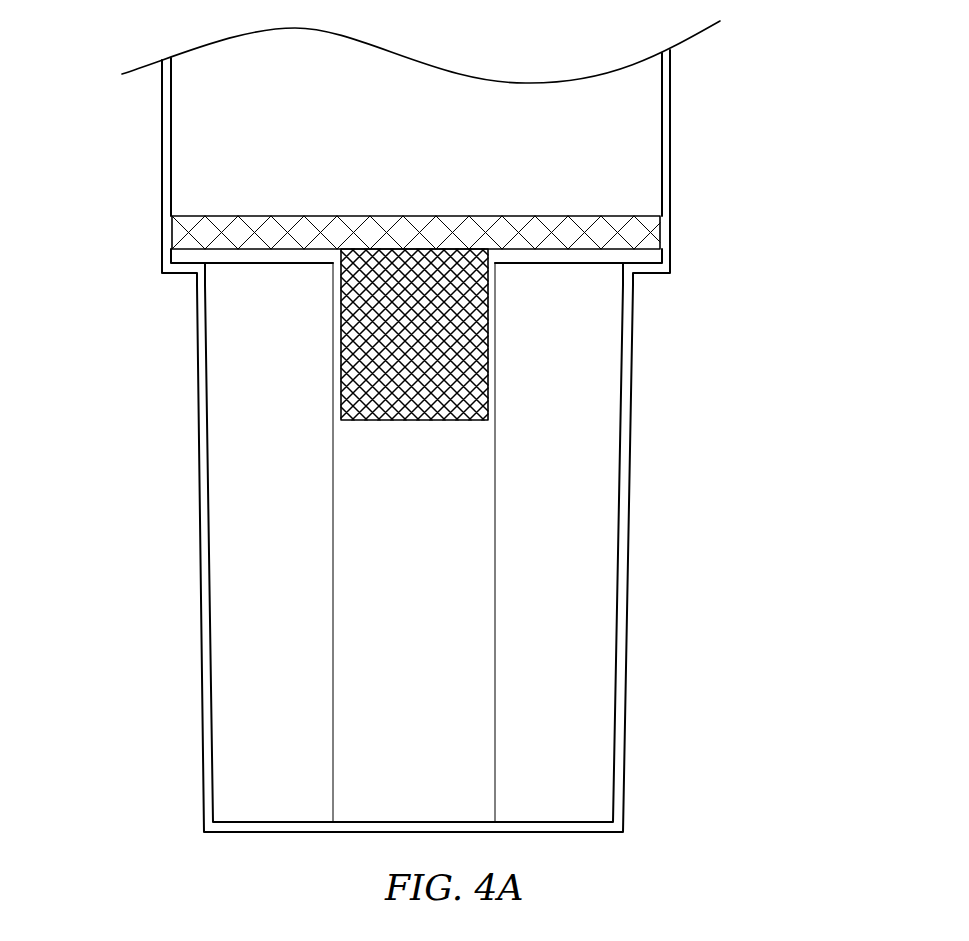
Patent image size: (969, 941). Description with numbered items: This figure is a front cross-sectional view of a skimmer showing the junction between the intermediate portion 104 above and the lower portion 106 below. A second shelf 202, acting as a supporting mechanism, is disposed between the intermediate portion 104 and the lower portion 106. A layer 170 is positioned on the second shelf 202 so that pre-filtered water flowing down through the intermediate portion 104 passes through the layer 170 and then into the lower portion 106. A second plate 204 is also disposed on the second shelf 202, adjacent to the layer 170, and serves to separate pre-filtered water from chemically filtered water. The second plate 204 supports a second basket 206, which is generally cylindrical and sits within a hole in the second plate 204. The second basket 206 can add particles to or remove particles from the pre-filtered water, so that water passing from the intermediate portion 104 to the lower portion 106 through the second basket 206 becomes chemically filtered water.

The intermediate portion 104 is at (709, 164).
The lower portion 106 is at (691, 543).
The layer 170 is at (620, 241).
The second shelf 202 is at (645, 277).
The second plate 204 is at (228, 258).
The second basket 206 is at (353, 422).